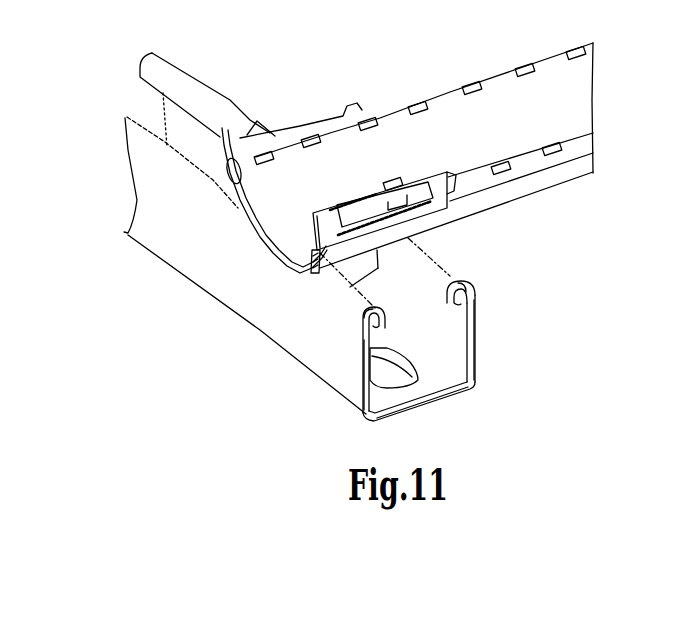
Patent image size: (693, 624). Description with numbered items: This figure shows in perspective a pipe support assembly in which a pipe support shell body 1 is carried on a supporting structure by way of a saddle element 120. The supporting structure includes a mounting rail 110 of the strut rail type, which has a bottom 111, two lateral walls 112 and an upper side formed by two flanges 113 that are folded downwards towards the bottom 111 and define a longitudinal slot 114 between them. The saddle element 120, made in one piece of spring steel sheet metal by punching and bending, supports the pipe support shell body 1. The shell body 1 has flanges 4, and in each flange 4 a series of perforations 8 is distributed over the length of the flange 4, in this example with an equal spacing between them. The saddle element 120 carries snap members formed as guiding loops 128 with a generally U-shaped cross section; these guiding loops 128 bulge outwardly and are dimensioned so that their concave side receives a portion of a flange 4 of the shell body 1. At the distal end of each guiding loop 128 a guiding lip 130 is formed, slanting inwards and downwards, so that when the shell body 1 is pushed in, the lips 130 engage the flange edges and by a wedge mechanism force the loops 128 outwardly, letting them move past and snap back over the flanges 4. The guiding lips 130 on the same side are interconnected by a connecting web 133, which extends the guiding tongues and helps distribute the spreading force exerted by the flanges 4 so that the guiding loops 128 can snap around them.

The pipe support shell body 1 is at (542, 110).
The flange 4 is at (535, 160).
The perforation 8 is at (500, 165).
The mounting rail 110 is at (496, 347).
The bottom 111 is at (441, 396).
The lateral wall 112 is at (468, 318).
The flange 113 is at (436, 273).
The longitudinal slot 114 is at (401, 282).
The saddle element 120 is at (317, 273).
The guiding loop 128 is at (221, 140).
The guiding lip 130 is at (254, 122).
The connecting web 133 is at (311, 130).